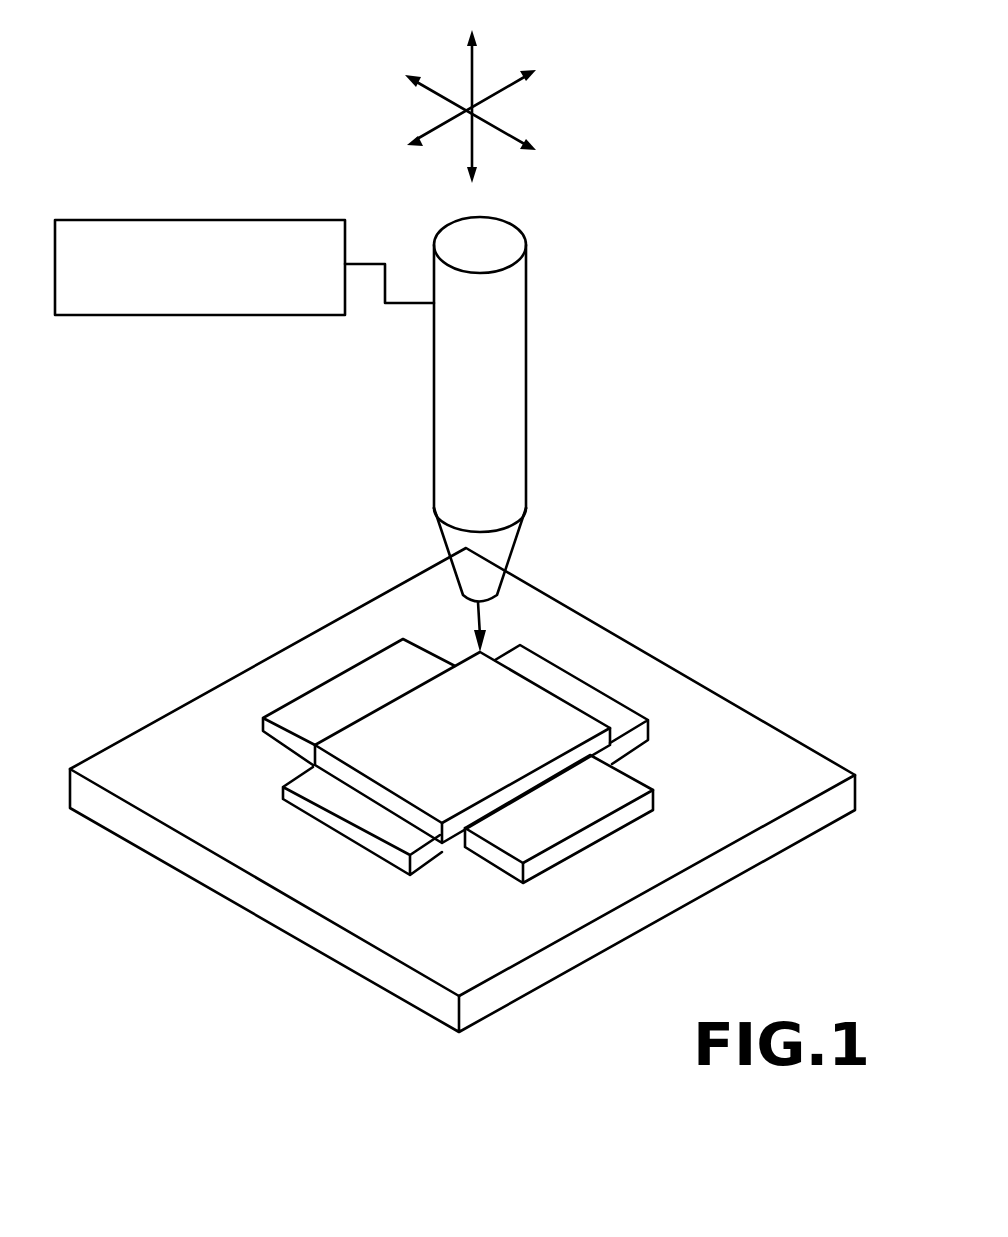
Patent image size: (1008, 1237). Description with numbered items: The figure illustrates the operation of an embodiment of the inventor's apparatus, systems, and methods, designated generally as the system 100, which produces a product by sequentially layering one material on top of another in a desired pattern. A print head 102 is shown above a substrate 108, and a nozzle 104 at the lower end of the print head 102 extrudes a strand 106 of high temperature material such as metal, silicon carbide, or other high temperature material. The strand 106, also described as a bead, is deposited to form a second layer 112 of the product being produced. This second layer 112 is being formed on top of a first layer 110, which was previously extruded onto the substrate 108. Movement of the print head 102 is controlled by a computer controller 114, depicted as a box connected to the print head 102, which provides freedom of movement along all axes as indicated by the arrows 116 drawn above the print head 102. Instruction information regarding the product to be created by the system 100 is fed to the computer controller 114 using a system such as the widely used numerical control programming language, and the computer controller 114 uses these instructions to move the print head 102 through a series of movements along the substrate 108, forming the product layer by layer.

The system 100 is at (696, 148).
The print head 102 is at (527, 333).
The nozzle 104 is at (470, 554).
The strand 106 is at (482, 623).
The substrate 108 is at (219, 788).
The first layer 110 is at (627, 792).
The second layer 112 is at (486, 745).
The computer controller 114 is at (183, 220).
The arrows 116 is at (475, 70).